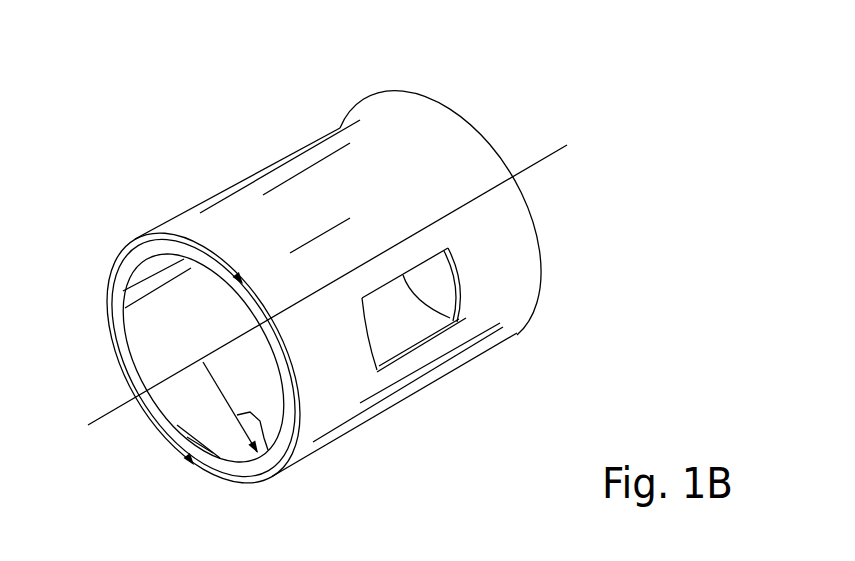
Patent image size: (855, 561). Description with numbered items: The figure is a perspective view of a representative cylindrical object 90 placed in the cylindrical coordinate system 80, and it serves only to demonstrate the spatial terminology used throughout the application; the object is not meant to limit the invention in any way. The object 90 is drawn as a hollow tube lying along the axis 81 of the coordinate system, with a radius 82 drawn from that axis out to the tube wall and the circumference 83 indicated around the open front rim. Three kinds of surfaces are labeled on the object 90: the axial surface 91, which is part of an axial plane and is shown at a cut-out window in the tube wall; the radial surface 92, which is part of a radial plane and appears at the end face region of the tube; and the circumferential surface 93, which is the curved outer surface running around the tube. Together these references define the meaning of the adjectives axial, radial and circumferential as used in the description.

The cylindrical coordinate system 80 is at (483, 112).
The longitudinal axis 81 is at (100, 420).
The retaining tab 82 is at (285, 461).
The front rim of open end 83 is at (115, 265).
The cylindrical object 90 is at (362, 98).
The axial surface 91 is at (437, 322).
The radial surface 92 is at (215, 473).
The circumferential surface 93 is at (305, 187).